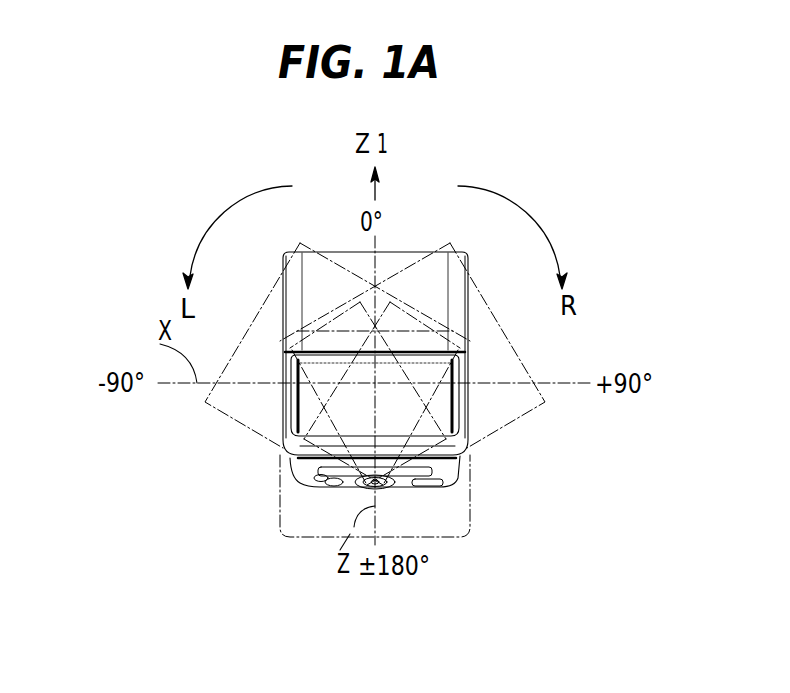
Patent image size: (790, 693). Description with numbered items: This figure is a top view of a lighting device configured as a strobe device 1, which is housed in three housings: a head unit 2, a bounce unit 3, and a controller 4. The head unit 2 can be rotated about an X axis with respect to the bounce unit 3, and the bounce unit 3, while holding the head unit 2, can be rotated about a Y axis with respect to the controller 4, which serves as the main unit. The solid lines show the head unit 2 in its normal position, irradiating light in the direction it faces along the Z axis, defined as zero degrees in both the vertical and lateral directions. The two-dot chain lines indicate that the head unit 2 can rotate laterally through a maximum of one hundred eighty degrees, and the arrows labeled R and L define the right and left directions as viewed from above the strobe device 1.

The strobe device 1 is at (414, 206).
The head unit 2 is at (430, 288).
The bounce unit 3 is at (443, 430).
The controller 4 is at (448, 472).